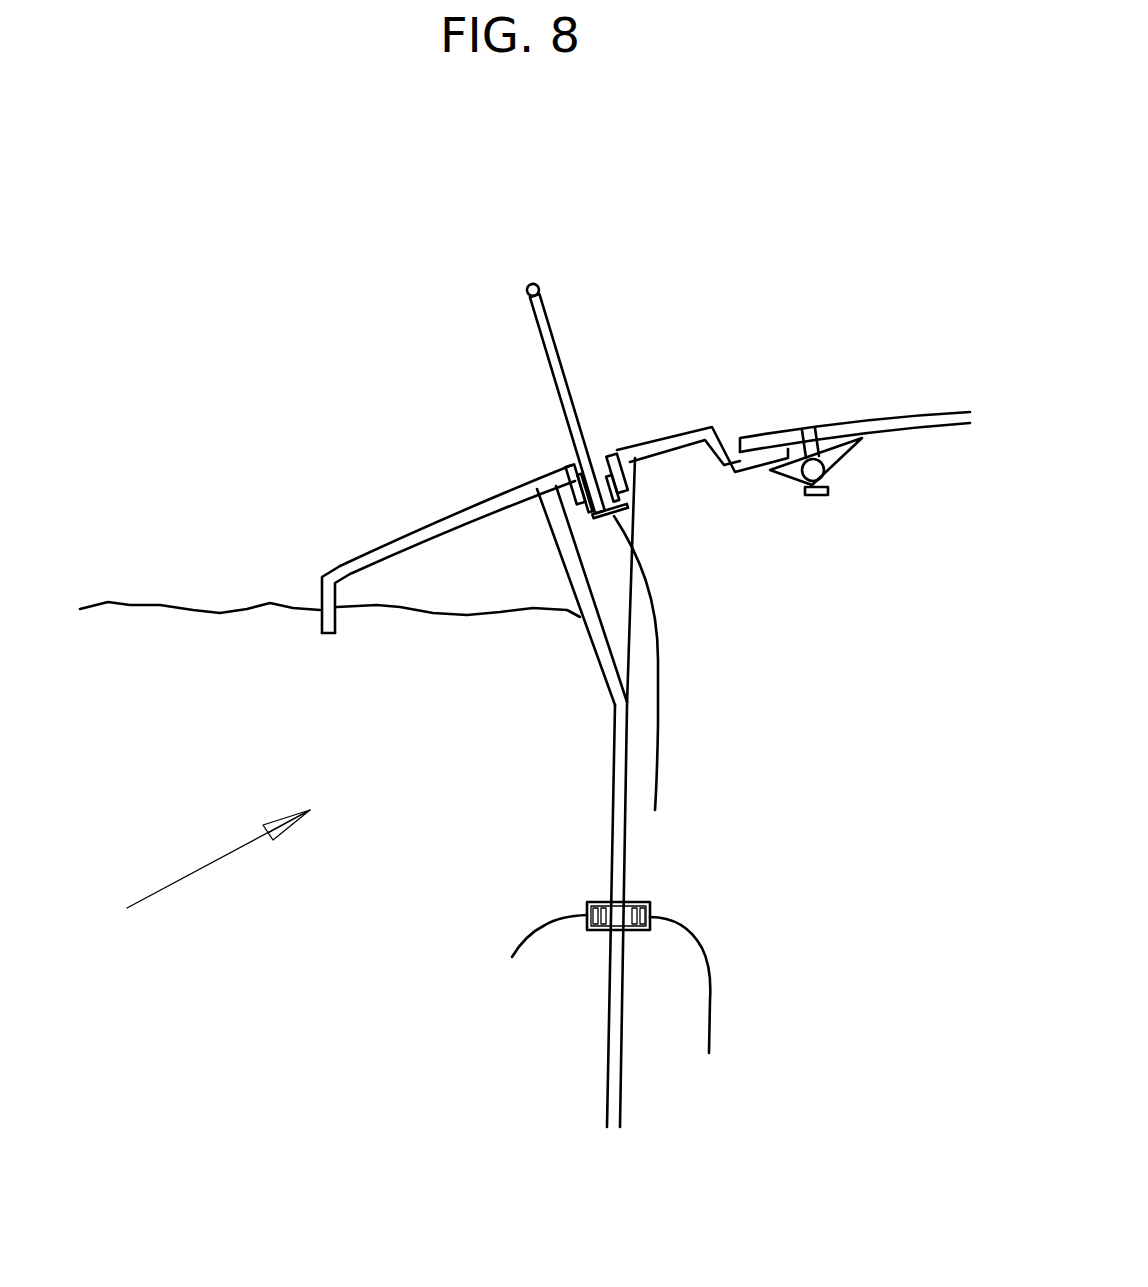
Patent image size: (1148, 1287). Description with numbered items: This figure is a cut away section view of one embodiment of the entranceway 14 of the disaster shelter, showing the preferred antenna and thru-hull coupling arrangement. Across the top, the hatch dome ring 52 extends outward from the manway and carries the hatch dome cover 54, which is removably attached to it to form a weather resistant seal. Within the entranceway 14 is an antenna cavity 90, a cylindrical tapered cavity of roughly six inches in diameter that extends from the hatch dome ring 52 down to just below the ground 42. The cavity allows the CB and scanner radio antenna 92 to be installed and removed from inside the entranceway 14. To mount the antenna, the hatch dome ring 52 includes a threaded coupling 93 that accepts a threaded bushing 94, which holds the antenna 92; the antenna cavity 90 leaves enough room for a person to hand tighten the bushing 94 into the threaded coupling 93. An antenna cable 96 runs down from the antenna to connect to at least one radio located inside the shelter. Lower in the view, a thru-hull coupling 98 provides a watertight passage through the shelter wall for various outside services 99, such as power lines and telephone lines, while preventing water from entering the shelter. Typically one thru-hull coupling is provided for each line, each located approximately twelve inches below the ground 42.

The entranceway 14 is at (193, 881).
The ground 42 is at (162, 607).
The hatch dome ring 52 is at (400, 530).
The hatch dome cover 54 is at (940, 405).
The antenna cavity 90 is at (585, 562).
The CB and scanner radio antenna 92 is at (540, 332).
The threaded coupling 93 is at (567, 467).
The threaded bushing 94 is at (610, 518).
The antenna cable 96 is at (660, 710).
The thru-hull coupling 98 is at (585, 928).
The outside services 99 is at (710, 1037).